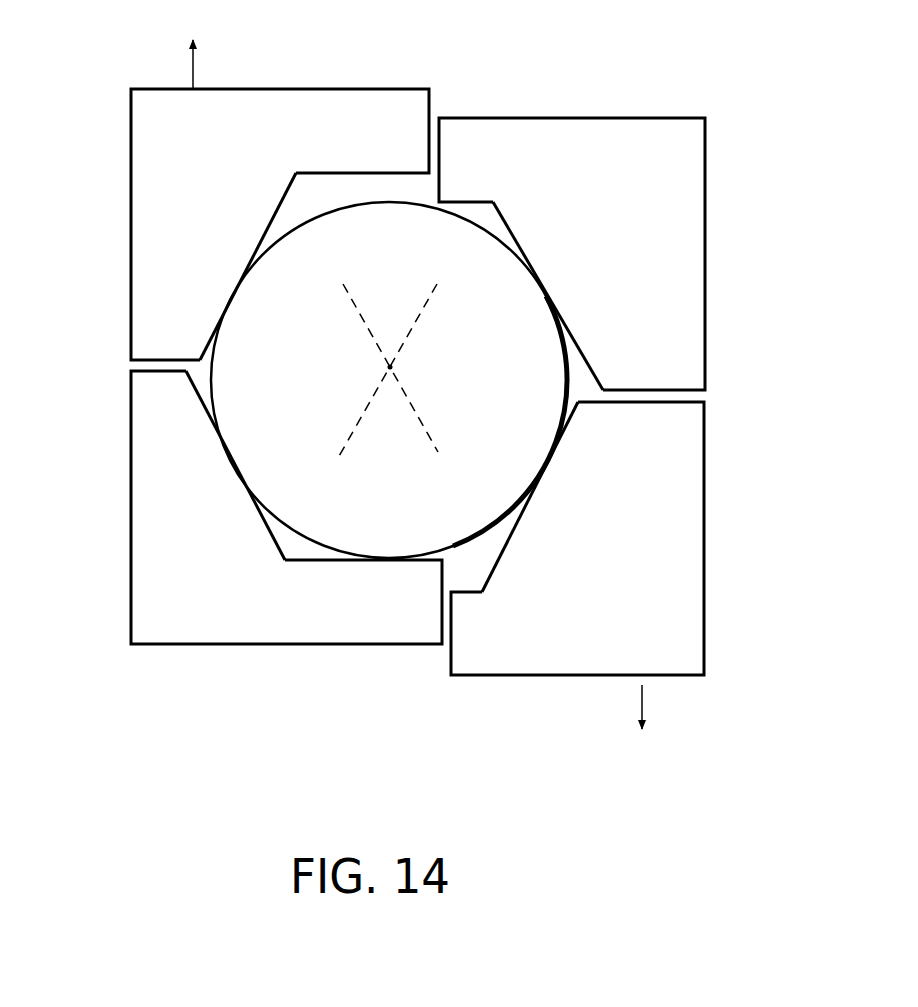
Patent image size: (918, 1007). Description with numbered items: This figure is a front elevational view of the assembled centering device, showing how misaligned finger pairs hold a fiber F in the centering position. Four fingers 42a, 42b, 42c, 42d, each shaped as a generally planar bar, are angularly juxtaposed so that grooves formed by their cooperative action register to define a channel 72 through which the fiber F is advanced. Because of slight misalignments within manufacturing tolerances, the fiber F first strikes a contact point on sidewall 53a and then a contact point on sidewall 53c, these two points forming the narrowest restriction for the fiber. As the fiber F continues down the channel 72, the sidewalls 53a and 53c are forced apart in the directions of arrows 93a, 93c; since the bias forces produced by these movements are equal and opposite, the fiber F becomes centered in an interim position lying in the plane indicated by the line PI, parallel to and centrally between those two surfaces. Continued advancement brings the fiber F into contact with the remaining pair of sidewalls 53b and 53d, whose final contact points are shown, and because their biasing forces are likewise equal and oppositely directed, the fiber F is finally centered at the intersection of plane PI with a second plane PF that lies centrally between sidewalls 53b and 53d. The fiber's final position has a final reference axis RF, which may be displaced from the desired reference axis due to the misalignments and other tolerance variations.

The finger 42a is at (241, 224).
The finger 42b is at (613, 254).
The finger 42c is at (616, 538).
The finger 42d is at (248, 507).
The sidewall 53a is at (218, 266).
The sidewall 53b is at (554, 295).
The sidewall 53c is at (550, 466).
The sidewall 53d is at (237, 483).
The channel 72 is at (327, 193).
The arrow 93a is at (196, 48).
The arrow 93c is at (642, 724).
The fiber F is at (457, 550).
The plane PF is at (357, 310).
The plane PI is at (427, 301).
The final reference axis RF is at (386, 368).